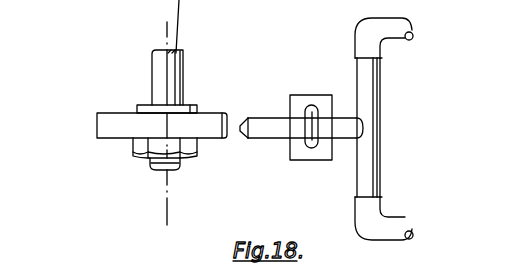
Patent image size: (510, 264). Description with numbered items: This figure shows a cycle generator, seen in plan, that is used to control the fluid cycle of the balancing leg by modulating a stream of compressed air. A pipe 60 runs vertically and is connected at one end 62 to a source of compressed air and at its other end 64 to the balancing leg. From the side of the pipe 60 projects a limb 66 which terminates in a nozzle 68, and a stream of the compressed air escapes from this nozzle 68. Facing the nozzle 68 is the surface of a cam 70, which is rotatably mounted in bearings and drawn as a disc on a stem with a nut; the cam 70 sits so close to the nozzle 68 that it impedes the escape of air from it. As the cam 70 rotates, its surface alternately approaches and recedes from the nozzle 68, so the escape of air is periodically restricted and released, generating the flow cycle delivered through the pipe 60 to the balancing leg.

The pipe 60 is at (375, 115).
The end 62 is at (413, 38).
The other end 64 is at (403, 220).
The limb 66 is at (266, 121).
The nozzle 68 is at (240, 136).
The cam 70 is at (212, 122).